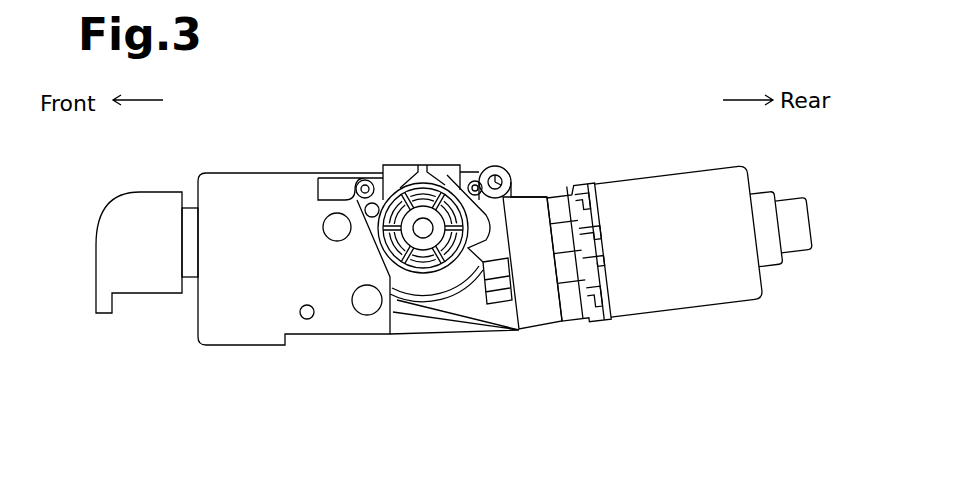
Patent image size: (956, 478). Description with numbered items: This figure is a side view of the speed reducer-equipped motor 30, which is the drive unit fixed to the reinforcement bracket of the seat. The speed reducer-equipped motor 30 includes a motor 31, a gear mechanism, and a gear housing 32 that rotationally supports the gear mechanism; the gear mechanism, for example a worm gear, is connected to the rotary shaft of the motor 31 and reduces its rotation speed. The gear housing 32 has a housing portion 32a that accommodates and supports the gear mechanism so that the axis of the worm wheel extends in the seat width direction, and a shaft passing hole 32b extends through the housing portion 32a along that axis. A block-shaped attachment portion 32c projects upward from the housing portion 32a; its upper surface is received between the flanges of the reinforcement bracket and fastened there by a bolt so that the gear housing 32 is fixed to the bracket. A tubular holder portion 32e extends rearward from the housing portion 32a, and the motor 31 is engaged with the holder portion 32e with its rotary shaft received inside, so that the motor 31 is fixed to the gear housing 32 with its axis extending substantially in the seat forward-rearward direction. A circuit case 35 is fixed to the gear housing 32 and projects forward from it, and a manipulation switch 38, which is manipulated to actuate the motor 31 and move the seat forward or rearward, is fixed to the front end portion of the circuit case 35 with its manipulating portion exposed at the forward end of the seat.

The speed reducer-equipped motor 30 is at (641, 125).
The motor 31 is at (693, 298).
The gear housing 32 is at (527, 202).
The housing portion 32a is at (430, 302).
The shaft passing hole 32b is at (415, 226).
The attachment portion 32c is at (437, 165).
The holder portion 32e is at (542, 321).
The circuit case 35 is at (237, 182).
The manipulation switch 38 is at (139, 197).